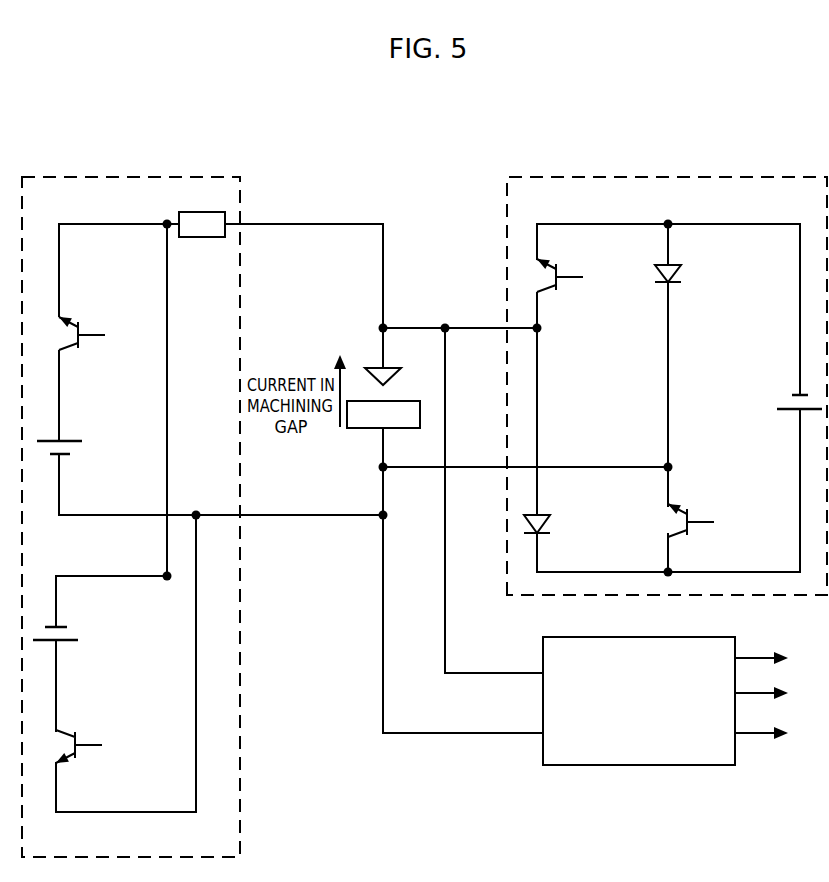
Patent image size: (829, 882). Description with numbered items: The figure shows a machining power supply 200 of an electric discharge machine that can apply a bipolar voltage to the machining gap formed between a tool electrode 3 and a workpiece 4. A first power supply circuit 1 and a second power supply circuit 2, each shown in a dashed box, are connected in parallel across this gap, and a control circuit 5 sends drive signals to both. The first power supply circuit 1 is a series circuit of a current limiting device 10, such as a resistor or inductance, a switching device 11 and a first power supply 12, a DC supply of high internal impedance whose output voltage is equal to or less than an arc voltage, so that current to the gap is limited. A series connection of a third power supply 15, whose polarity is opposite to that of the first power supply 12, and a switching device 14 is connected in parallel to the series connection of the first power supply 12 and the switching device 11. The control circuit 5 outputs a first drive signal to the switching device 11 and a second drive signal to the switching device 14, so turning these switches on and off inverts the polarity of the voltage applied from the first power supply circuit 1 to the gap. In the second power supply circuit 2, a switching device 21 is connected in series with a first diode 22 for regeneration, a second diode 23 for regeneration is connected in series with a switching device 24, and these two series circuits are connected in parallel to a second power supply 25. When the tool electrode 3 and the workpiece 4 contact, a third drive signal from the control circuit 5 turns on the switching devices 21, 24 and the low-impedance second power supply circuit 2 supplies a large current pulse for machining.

The first power supply circuit 1 is at (157, 176).
The second power supply circuit 2 is at (662, 176).
The machining power supply 200 is at (404, 206).
The current limiting device 10 is at (208, 240).
The switching device 11 is at (84, 334).
The first power supply 12 is at (80, 440).
The third power supply 15 is at (73, 642).
The switching device 14 is at (80, 752).
The tool electrode 3 is at (366, 368).
The workpiece 4 is at (366, 430).
The switching device 21 is at (562, 272).
The first diode 22 is at (551, 530).
The second diode 23 is at (682, 273).
The switching device 24 is at (692, 515).
The second power supply 25 is at (788, 395).
The control circuit 5 is at (640, 767).